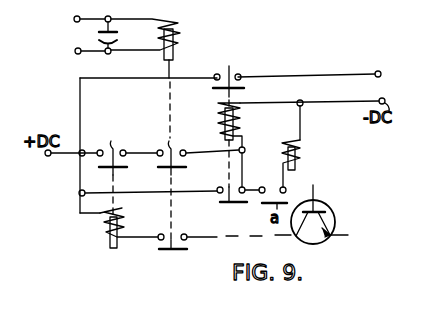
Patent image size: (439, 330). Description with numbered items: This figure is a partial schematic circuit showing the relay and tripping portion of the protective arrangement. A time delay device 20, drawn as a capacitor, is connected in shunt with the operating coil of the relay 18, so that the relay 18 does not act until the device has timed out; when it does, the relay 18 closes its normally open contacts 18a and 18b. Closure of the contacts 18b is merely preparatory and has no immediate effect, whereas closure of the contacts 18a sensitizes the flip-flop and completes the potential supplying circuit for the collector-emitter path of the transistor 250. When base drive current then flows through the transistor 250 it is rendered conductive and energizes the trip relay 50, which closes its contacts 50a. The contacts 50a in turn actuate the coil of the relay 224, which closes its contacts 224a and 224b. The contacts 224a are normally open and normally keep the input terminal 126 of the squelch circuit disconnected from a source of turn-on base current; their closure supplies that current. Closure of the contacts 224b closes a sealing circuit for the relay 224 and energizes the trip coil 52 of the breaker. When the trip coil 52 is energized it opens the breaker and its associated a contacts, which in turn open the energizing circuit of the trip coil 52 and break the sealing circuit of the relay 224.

The time delay device 20 is at (98, 33).
The relay 18 is at (176, 35).
The contacts 18a is at (157, 243).
The contacts 18b is at (181, 128).
The relay 224 is at (237, 132).
The contacts 224a is at (237, 55).
The contacts 224b is at (218, 194).
The input terminal 126 is at (377, 62).
The trip coil 52 is at (297, 155).
The trip relay 50 is at (108, 237).
The contacts 50a is at (113, 151).
The transistor 250 is at (335, 216).